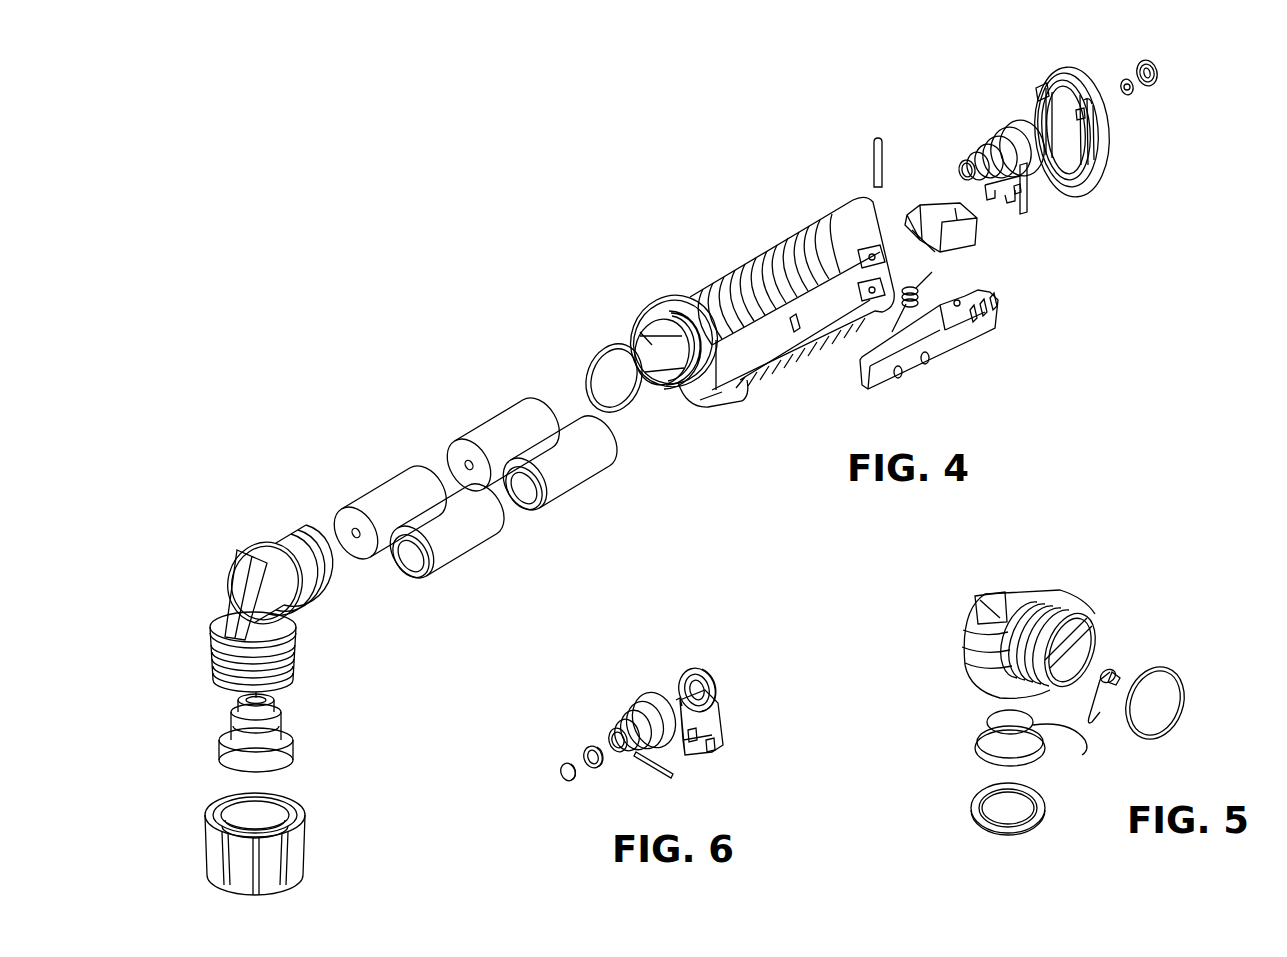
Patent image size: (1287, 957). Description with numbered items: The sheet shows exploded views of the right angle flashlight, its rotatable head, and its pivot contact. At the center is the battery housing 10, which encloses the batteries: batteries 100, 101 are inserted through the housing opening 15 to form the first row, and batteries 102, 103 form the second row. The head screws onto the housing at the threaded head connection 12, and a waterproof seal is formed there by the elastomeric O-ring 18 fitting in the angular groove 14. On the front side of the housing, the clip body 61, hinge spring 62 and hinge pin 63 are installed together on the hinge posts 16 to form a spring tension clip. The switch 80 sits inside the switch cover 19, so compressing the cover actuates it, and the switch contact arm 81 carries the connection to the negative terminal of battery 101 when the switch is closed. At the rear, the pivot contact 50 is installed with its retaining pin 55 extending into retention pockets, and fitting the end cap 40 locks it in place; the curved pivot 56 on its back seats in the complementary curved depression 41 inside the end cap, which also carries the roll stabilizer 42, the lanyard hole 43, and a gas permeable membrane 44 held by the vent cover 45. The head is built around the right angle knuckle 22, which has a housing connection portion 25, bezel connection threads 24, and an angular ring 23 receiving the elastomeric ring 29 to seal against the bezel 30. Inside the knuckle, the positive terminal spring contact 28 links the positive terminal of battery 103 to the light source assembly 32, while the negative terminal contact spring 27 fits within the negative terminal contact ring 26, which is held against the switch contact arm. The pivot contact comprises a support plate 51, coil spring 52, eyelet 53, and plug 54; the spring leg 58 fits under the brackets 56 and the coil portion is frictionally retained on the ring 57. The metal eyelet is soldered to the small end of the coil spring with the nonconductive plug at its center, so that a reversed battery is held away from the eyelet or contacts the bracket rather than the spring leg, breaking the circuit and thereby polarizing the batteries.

In FIG. 4, the battery housing 10 is at (753, 262).
In FIG. 4, the threaded head connection 12 is at (652, 318).
In FIG. 4, the angular groove 14 is at (664, 303).
In FIG. 4, the housing opening 15 is at (652, 345).
In FIG. 4, the hinge posts 16 is at (863, 323).
In FIG. 4, the elastomeric O-ring 18 is at (592, 368).
In FIG. 4, the switch cover 19 is at (727, 410).
In FIG. 4, the right angle knuckle 22 is at (237, 598).
In FIG. 5, the right angle knuckle 22 is at (977, 618).
In FIG. 5, the angular ring 23 is at (1068, 610).
In FIG. 5, the bezel connection threads 24 is at (1080, 616).
In FIG. 5, the housing connection portion 25 is at (963, 668).
In FIG. 5, the negative terminal contact ring 26 is at (1047, 808).
In FIG. 5, the negative terminal contact spring 27 is at (1048, 757).
In FIG. 5, the positive terminal spring contact 28 is at (1110, 672).
In FIG. 5, the elastomeric ring 29 is at (1182, 704).
In FIG. 4, the bezel 30 is at (207, 852).
In FIG. 4, the light source assembly 32 is at (220, 742).
In FIG. 4, the end cap 40 is at (1108, 172).
In FIG. 4, the curved depression 41 is at (1097, 135).
In FIG. 4, the roll stabilizer 42 is at (1037, 122).
In FIG. 4, the lanyard hole 43 is at (1040, 97).
In FIG. 4, the gas permeable membrane 44 is at (1130, 97).
In FIG. 4, the vent cover 45 is at (1160, 80).
In FIG. 4, the pivot contact 50 is at (1027, 195).
In FIG. 6, the support plate 51 is at (720, 737).
In FIG. 6, the coil spring 52 is at (642, 702).
In FIG. 6, the eyelet 53 is at (597, 768).
In FIG. 6, the plug 54 is at (566, 768).
In FIG. 4, the retaining pin 55 is at (1035, 185).
In FIG. 4, the brackets 56 is at (1030, 175).
In FIG. 6, the brackets 56 is at (712, 760).
In FIG. 6, the ring 57 is at (707, 672).
In FIG. 6, the spring leg 58 is at (655, 775).
In FIG. 4, the clip body 61 is at (963, 343).
In FIG. 4, the hinge spring 62 is at (917, 295).
In FIG. 4, the hinge pin 63 is at (872, 155).
In FIG. 4, the switch 80 is at (977, 237).
In FIG. 4, the switch contact arm 81 is at (930, 247).
In FIG. 4, the battery 100 is at (563, 477).
In FIG. 4, the battery 101 is at (447, 543).
In FIG. 4, the battery 102 is at (512, 424).
In FIG. 4, the battery 103 is at (405, 487).